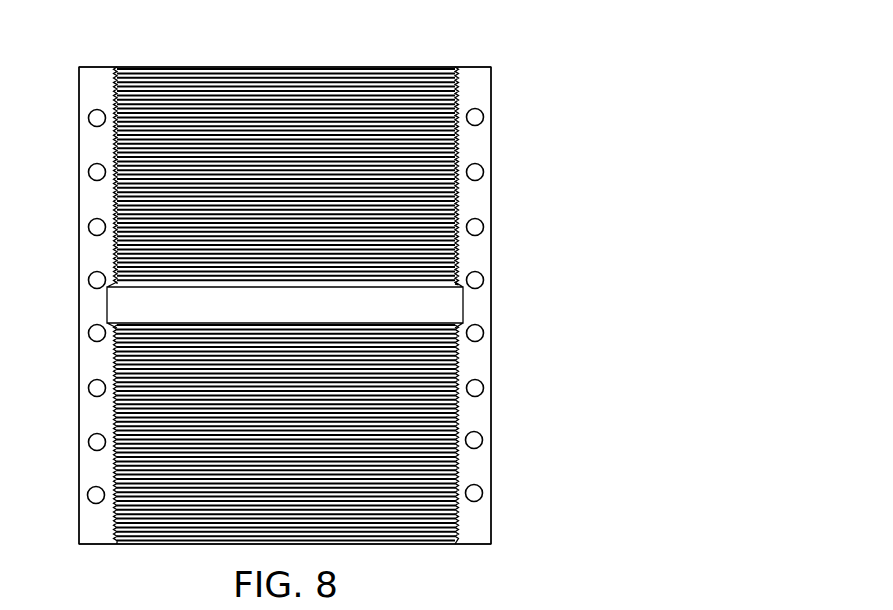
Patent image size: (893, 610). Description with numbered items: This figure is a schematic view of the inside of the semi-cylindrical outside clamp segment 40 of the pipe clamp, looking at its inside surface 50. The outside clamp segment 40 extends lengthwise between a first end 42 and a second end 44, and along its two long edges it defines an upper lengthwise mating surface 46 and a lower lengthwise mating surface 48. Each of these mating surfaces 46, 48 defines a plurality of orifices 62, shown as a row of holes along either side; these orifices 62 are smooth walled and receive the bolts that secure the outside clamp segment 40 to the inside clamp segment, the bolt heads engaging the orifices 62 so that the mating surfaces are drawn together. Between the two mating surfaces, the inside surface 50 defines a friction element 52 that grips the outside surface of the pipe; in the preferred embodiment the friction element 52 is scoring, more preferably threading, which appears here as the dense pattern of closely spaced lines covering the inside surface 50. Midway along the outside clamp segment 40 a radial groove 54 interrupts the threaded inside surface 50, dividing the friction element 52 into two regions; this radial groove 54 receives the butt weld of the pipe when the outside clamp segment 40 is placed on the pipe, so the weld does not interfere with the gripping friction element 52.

The outside clamp segment 40 is at (208, 55).
The first end 42 is at (117, 552).
The second end 44 is at (415, 60).
The upper lengthwise mating surface 46 is at (90, 206).
The lower lengthwise mating surface 48 is at (481, 146).
The inside surface 50 is at (286, 305).
The friction element 52 is at (368, 478).
The radial groove 54 is at (276, 313).
The plurality of orifices 62 is at (88, 442).